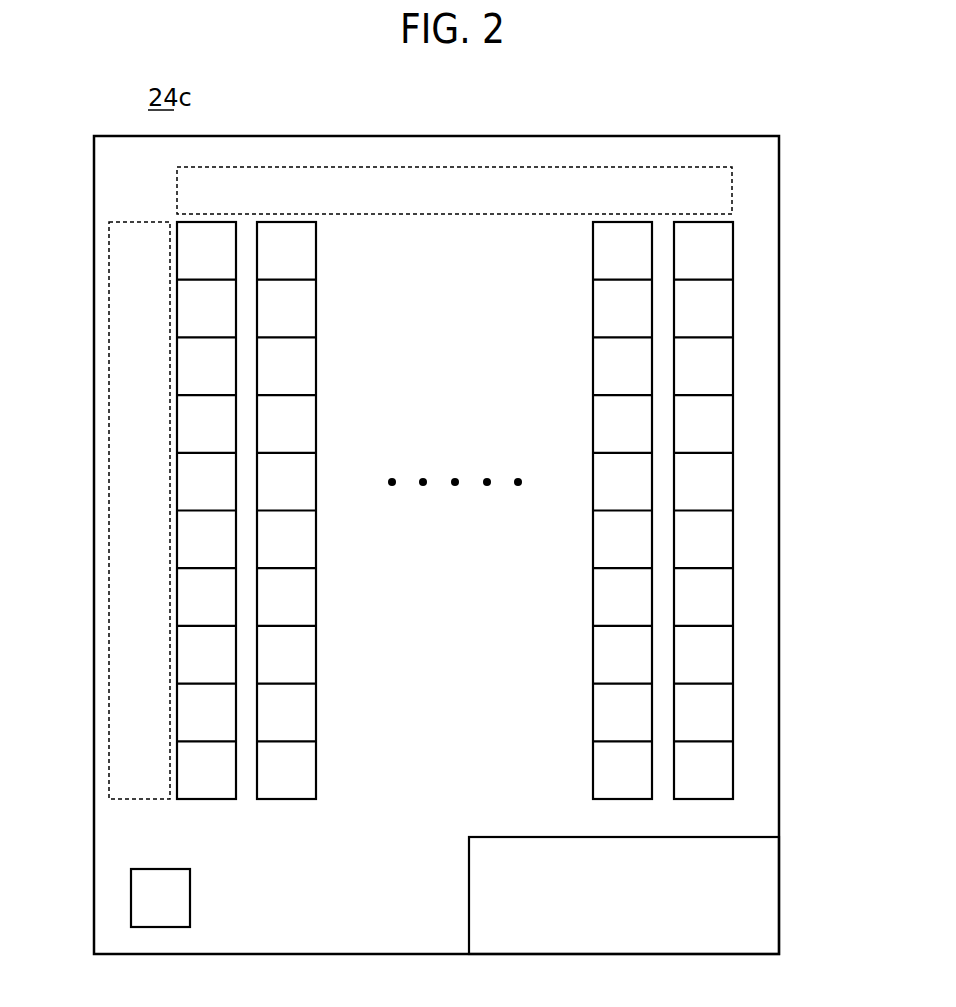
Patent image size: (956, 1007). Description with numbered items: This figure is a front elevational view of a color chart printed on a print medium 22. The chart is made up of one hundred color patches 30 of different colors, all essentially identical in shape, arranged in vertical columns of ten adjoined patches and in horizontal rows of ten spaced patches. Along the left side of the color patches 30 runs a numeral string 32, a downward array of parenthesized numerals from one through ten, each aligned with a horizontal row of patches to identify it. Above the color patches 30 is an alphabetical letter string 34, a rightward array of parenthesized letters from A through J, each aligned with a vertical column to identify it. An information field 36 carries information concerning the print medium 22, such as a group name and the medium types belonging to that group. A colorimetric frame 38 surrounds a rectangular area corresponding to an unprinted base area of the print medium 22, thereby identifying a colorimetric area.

The print medium 22 is at (757, 151).
The color patches 30 is at (715, 370).
The numeral string 32 is at (109, 424).
The alphabetical letter string 34 is at (470, 167).
The information field 36 is at (766, 863).
The colorimetric frame 38 is at (160, 928).